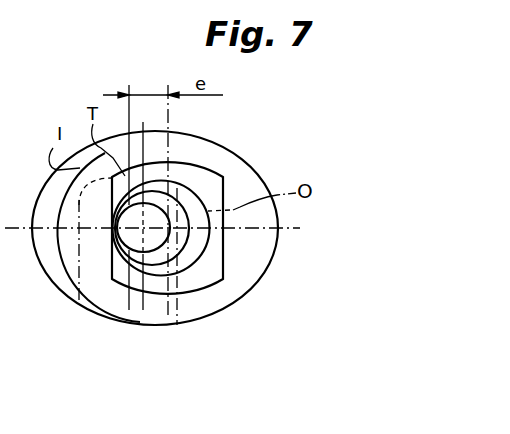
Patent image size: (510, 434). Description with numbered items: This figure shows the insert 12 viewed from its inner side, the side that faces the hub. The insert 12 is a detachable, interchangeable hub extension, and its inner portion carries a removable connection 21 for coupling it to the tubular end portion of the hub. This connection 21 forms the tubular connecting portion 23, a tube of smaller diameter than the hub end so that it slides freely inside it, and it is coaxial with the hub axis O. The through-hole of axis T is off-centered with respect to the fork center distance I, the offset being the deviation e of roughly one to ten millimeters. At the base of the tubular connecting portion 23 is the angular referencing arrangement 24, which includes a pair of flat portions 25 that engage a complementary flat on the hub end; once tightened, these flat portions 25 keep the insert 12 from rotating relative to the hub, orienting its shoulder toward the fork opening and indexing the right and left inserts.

The insert 12 is at (240, 128).
The removable connection 21 is at (228, 187).
The tubular connecting portion 23 is at (262, 275).
The angular referencing arrangement 24 is at (213, 293).
The flat portions 25 is at (117, 275).